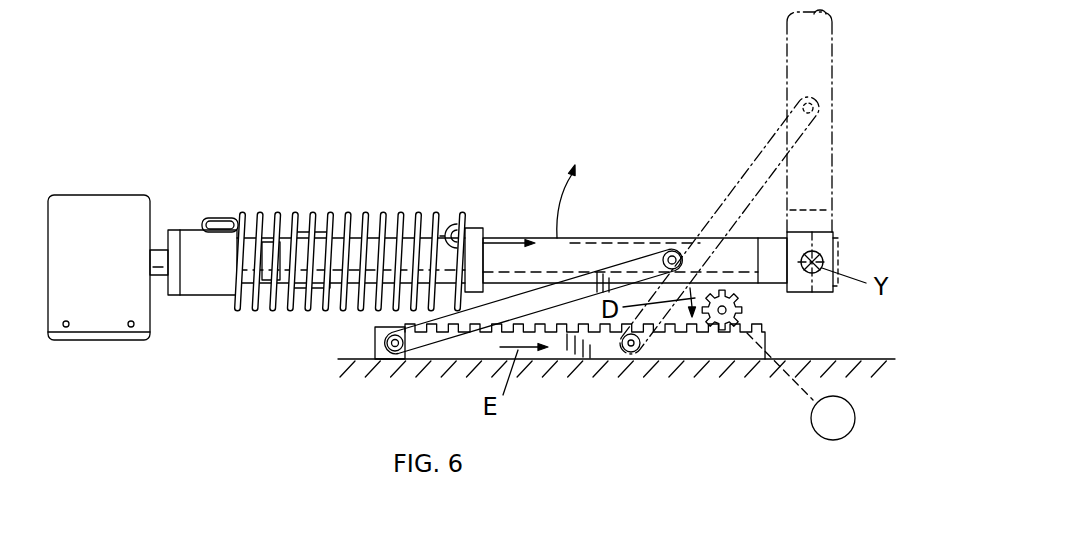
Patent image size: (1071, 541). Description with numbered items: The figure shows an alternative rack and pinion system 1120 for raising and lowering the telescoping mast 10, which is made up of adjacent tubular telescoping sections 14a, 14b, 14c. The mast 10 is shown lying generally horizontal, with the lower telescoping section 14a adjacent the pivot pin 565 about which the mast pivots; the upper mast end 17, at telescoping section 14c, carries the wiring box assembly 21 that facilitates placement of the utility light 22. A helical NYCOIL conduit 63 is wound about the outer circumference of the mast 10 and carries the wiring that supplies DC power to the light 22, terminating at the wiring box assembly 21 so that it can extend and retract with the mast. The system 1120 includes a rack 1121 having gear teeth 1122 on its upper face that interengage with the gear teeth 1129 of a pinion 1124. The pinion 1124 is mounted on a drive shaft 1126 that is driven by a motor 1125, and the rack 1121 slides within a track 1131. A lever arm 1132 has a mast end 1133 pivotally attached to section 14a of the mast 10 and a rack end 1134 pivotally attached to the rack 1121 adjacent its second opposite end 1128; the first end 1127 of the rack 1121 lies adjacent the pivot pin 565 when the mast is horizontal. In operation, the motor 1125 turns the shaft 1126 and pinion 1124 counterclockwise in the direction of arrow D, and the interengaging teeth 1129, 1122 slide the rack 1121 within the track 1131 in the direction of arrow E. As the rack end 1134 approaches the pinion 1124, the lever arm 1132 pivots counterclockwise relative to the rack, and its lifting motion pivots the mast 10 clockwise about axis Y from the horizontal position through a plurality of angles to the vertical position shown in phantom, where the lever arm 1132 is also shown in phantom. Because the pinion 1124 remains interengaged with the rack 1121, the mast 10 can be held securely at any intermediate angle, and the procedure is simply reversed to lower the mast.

The utility light 22 is at (106, 182).
The wiring box assembly 21 is at (200, 230).
The upper mast end 17 is at (246, 230).
The telescoping section 14b is at (302, 293).
The NYCOIL conduit 63 is at (283, 232).
The telescoping mast 10 is at (401, 162).
The telescoping section 14c is at (245, 265).
The telescoping section 14a is at (605, 238).
The gear teeth 1122 is at (540, 238).
The lever arm 1132 is at (507, 287).
The mast end 1133 is at (668, 250).
The pinion 1124 is at (719, 273).
The pivot pin 565 is at (822, 253).
The gear teeth 1129 is at (743, 310).
The track 1131 is at (813, 357).
The rack end 1134 is at (402, 362).
The second opposite end 1128 is at (373, 343).
The rack 1121 is at (564, 366).
The rack and pinion system 1120 is at (609, 375).
The drive shaft 1126 is at (720, 320).
The first end 1127 is at (748, 350).
The motor 1125 is at (830, 440).